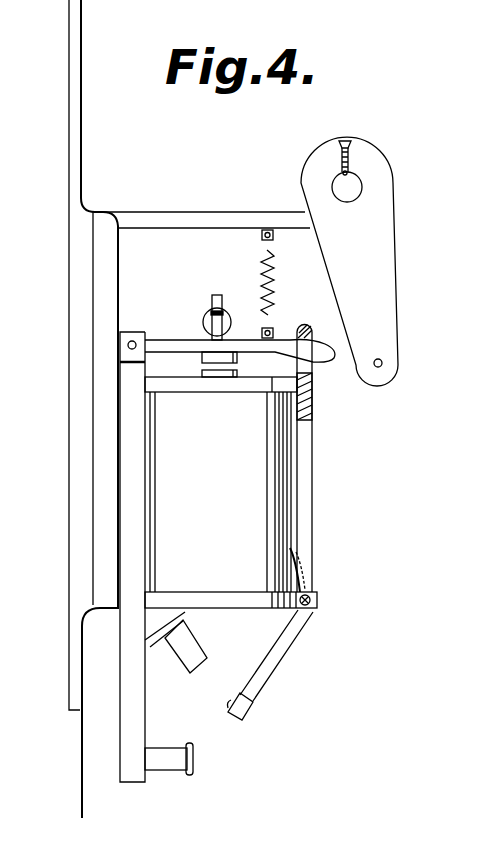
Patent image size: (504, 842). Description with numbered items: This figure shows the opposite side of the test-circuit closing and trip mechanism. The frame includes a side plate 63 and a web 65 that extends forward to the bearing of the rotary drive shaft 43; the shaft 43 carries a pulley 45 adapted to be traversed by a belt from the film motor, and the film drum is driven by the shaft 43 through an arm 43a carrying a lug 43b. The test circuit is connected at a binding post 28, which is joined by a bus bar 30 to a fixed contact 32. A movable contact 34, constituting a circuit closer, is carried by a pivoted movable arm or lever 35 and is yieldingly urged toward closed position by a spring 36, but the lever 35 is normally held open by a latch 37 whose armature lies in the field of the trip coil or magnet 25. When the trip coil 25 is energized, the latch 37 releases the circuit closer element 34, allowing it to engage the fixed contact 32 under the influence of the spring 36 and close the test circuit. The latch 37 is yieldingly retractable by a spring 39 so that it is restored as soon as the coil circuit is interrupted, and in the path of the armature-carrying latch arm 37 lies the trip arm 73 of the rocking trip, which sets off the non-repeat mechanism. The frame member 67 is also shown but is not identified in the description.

The frame wall 67 is at (103, 392).
The top bar 65 is at (190, 217).
The spring anchor 63 is at (262, 234).
The spring 39 is at (279, 285).
The adjusting screw 73 is at (217, 297).
The lever arm 43a is at (402, 297).
The pivot hole 43 is at (350, 187).
The lever lower hole 43b is at (382, 364).
The screw 45 is at (370, 156).
The top plate 37 is at (342, 358).
The rod 35 is at (308, 450).
The cylinder 25 is at (272, 513).
The catch 36 is at (305, 577).
The bracket 30 is at (155, 727).
The pin 28 is at (163, 772).
The block 32 is at (195, 668).
The strut 34 is at (250, 705).